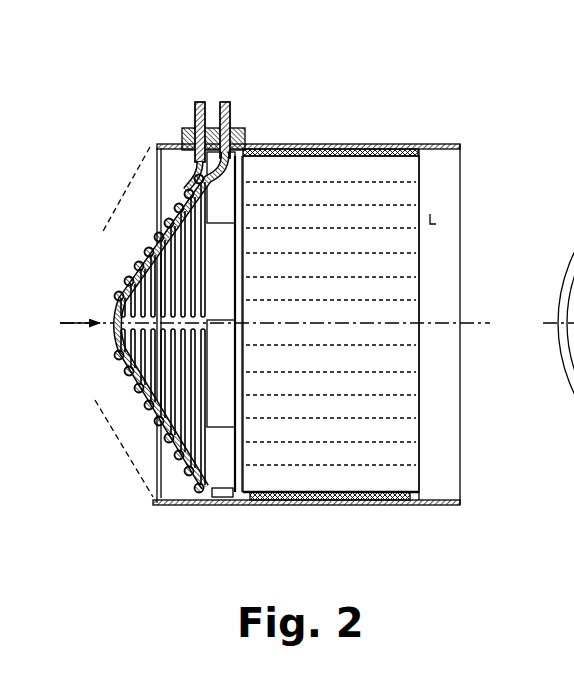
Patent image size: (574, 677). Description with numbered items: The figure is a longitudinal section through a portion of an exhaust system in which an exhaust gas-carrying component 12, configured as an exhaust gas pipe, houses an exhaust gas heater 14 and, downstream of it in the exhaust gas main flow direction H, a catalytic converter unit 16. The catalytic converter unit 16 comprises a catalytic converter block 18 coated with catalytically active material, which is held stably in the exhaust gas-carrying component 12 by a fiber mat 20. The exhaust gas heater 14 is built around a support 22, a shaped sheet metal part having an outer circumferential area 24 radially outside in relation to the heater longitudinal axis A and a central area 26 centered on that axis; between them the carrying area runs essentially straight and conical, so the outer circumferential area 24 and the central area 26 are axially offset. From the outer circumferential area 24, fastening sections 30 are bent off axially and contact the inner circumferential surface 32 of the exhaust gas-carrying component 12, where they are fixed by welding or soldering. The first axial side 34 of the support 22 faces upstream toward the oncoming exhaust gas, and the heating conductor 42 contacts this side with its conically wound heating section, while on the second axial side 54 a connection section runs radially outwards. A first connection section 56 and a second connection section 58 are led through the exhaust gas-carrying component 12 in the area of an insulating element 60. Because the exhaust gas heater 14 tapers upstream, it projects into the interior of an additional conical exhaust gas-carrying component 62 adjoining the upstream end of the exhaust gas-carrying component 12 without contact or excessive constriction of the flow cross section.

The exhaust gas-carrying component 12 is at (461, 171).
The exhaust gas heater 14 is at (128, 401).
The catalytic converter unit 16 is at (433, 167).
The catalytic converter block 18 is at (420, 266).
The fiber mat 20 is at (388, 505).
The support 22 is at (192, 192).
The outer circumferential area 24 is at (207, 492).
The central area 26 is at (117, 313).
The fastening sections 30 is at (238, 502).
The inner circumferential surface 32 is at (431, 222).
The first axial side 34 is at (127, 239).
The heating conductor 42 is at (151, 411).
The second axial side 54 is at (221, 241).
The first connection section 56 is at (199, 102).
The second connection section 58 is at (227, 102).
The terminal plate 60 is at (183, 135).
The additional exhaust gas-carrying component 62 is at (133, 176).
The heater longitudinal axis A is at (397, 324).
The exhaust gas main flow direction H is at (73, 324).